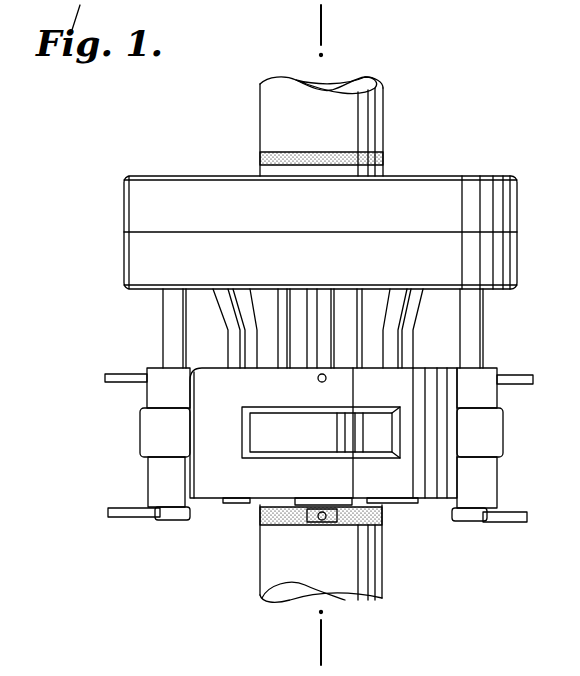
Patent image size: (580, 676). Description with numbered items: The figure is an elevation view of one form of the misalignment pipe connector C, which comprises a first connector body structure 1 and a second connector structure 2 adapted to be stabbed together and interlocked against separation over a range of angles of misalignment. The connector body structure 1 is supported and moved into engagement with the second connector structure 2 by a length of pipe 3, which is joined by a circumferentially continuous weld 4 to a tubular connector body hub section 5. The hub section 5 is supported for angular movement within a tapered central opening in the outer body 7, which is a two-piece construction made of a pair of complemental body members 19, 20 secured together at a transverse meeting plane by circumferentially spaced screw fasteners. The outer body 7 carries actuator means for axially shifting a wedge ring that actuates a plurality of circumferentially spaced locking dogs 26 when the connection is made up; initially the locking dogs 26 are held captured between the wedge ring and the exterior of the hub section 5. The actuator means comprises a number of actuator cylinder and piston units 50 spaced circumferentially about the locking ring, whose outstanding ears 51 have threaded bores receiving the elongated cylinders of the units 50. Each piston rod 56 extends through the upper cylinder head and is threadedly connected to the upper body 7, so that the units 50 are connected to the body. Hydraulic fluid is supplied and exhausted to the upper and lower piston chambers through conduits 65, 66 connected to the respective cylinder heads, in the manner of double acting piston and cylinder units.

The connector body structure 1 is at (490, 176).
The second connector structure 2 is at (332, 25).
The pipe 3 is at (383, 115).
The weld 4 is at (262, 158).
The hub section 5 is at (385, 168).
The outer body 7 is at (124, 222).
The body member 19 is at (176, 192).
The body member 20 is at (162, 268).
The locking dogs 26 is at (298, 330).
The actuator cylinder and piston units 50 is at (160, 475).
The ears 51 is at (148, 428).
The rod 56 is at (320, 305).
The conduit 65 is at (125, 372).
The conduit 66 is at (128, 513).
The pipe connector C is at (495, 323).